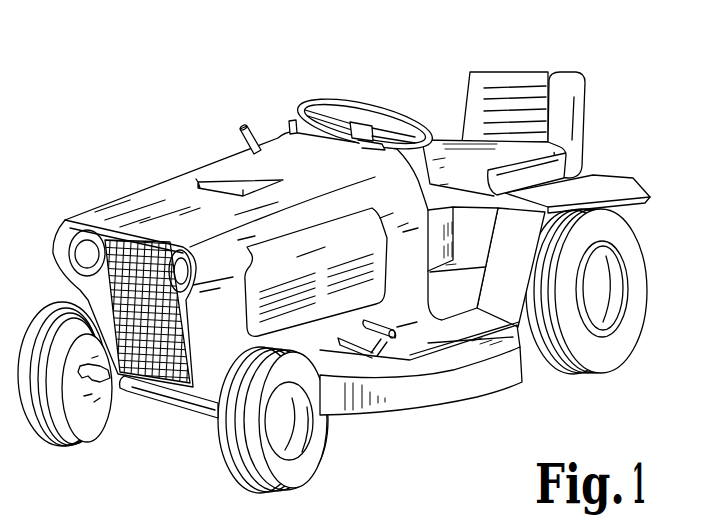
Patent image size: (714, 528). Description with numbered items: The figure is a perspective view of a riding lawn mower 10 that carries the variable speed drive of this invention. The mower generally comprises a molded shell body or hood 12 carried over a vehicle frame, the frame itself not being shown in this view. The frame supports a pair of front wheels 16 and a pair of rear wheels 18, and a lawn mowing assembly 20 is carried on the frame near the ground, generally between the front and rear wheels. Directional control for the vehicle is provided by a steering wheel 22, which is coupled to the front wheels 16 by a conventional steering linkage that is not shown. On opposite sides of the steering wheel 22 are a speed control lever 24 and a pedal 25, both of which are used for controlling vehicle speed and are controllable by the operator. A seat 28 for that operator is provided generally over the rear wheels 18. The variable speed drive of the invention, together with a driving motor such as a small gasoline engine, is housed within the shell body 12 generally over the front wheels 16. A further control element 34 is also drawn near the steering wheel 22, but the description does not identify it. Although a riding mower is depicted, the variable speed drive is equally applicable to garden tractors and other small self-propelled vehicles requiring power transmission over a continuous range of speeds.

The riding lawn mower 10 is at (140, 162).
The molded shell body or hood 12 is at (95, 205).
The front wheels 16 is at (63, 418).
The rear wheels 18 is at (648, 290).
The lawn mowing assembly 20 is at (488, 382).
The steering wheel 22 is at (345, 100).
The speed control lever 24 is at (243, 126).
The pedal 25 is at (395, 340).
The seat 28 is at (572, 80).
The control lever 34 is at (292, 118).